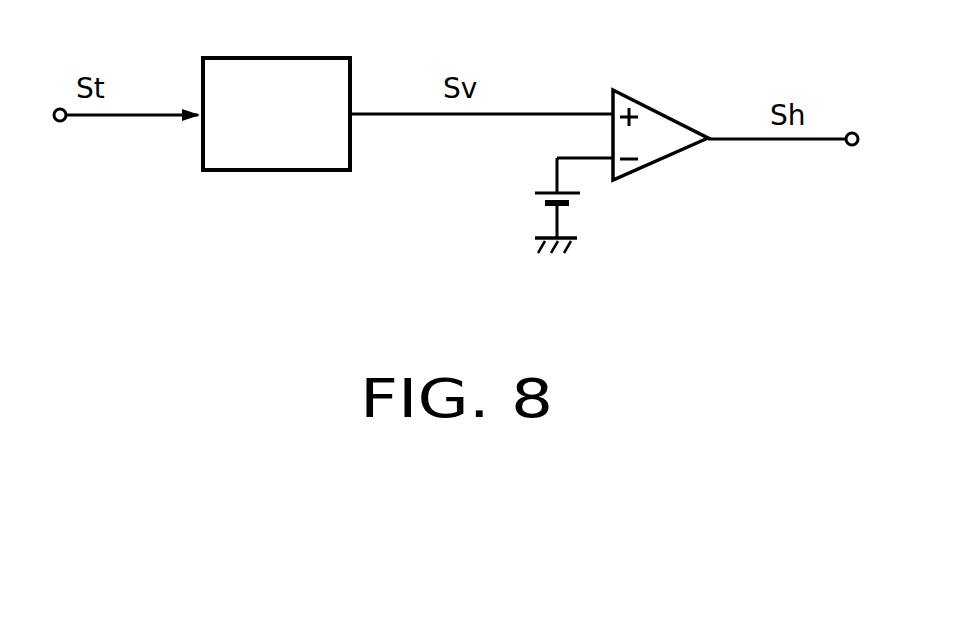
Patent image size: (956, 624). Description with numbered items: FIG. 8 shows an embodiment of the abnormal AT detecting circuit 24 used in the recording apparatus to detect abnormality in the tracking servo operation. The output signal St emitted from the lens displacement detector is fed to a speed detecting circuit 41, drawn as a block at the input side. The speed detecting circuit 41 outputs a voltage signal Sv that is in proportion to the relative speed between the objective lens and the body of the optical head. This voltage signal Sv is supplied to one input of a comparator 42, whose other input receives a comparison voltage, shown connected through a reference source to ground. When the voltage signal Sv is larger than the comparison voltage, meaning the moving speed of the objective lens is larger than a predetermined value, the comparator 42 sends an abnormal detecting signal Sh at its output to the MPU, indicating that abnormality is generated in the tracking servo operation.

The speed detecting circuit 41 is at (330, 58).
The abnormal AT detecting circuit 24 is at (605, 131).
The comparator 42 is at (665, 161).